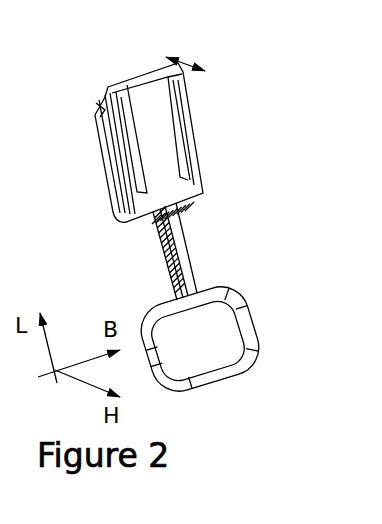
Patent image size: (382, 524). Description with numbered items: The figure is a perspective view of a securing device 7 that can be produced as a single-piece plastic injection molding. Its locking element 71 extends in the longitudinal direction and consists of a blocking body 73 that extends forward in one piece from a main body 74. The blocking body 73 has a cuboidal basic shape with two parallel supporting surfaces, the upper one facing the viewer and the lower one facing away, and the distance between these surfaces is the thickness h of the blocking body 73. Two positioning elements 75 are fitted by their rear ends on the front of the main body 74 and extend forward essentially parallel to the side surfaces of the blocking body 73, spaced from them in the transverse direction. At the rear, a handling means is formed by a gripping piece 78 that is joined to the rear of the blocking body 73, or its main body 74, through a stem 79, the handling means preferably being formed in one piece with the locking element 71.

The securing device 7 is at (262, 121).
The locking element 71 is at (115, 212).
The blocking body 73 is at (140, 107).
The main body 74 is at (188, 190).
The positioning elements 75 is at (178, 138).
The gripping piece 78 is at (243, 326).
The stem 79 is at (180, 262).
The thickness of the blocking body h is at (190, 65).